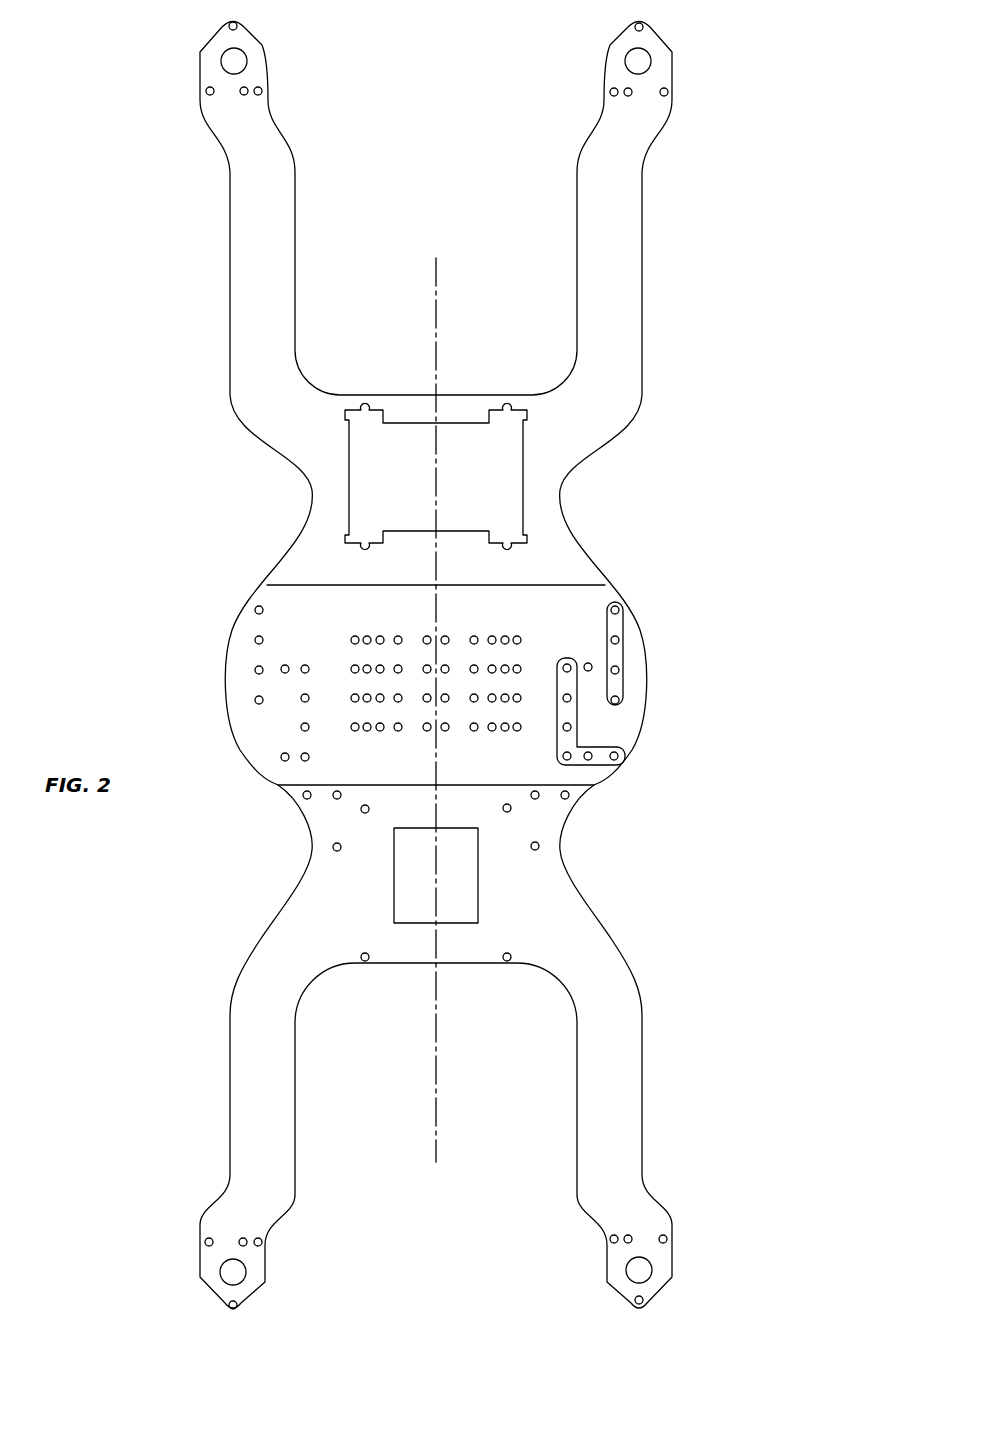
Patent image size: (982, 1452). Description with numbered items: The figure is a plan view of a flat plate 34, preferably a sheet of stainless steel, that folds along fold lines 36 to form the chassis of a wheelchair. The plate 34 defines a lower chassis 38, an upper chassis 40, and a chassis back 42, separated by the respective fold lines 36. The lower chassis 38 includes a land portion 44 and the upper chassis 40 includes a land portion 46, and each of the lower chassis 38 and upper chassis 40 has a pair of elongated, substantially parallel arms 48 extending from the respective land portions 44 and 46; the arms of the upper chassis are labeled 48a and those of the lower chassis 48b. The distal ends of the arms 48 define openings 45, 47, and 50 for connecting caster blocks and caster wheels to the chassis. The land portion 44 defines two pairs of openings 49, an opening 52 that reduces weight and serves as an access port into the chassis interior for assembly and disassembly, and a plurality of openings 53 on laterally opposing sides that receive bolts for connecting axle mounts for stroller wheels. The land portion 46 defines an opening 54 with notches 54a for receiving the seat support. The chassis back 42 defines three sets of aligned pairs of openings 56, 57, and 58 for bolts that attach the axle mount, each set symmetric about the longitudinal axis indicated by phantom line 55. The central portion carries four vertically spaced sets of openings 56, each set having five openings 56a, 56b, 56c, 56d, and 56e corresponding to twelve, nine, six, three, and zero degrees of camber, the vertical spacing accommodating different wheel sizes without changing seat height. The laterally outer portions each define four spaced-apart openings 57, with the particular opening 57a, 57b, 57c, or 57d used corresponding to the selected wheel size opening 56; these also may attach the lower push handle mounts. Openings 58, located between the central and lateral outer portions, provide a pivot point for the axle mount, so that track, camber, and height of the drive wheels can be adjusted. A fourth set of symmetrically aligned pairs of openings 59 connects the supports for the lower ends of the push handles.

The flat plate 34 is at (248, 806).
The fold lines 36 is at (428, 584).
The lower chassis 38 is at (272, 940).
The upper chassis 40 is at (250, 237).
The chassis back 42 is at (265, 600).
The land portion 44 is at (330, 893).
The openings 45 is at (627, 86).
The land portion 46 is at (305, 480).
The openings 47 is at (644, 28).
The arms 48 is at (260, 338).
The upper arm 48a is at (603, 263).
The lower arm 48b is at (288, 1102).
The openings 49 is at (365, 813).
The openings 50 is at (247, 63).
The opening 52 is at (428, 900).
The openings 53 is at (334, 798).
The opening 54 is at (408, 445).
The notches 54a is at (360, 404).
The phantom line 55 is at (438, 352).
The openings 56 is at (348, 635).
The opening 56a is at (399, 635).
The opening 56b is at (427, 635).
The opening 56c is at (380, 635).
The opening 56d is at (367, 635).
The opening 56e is at (355, 636).
The openings 57 is at (269, 705).
The opening 57a is at (254, 610).
The opening 57b is at (254, 640).
The opening 57c is at (254, 670).
The opening 57d is at (254, 700).
The openings 58 is at (310, 665).
The openings 59 is at (280, 756).